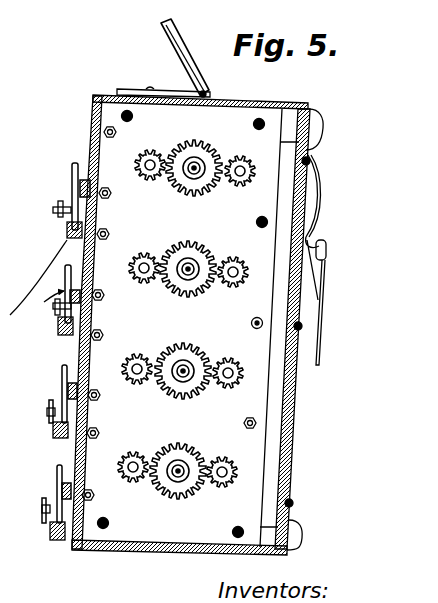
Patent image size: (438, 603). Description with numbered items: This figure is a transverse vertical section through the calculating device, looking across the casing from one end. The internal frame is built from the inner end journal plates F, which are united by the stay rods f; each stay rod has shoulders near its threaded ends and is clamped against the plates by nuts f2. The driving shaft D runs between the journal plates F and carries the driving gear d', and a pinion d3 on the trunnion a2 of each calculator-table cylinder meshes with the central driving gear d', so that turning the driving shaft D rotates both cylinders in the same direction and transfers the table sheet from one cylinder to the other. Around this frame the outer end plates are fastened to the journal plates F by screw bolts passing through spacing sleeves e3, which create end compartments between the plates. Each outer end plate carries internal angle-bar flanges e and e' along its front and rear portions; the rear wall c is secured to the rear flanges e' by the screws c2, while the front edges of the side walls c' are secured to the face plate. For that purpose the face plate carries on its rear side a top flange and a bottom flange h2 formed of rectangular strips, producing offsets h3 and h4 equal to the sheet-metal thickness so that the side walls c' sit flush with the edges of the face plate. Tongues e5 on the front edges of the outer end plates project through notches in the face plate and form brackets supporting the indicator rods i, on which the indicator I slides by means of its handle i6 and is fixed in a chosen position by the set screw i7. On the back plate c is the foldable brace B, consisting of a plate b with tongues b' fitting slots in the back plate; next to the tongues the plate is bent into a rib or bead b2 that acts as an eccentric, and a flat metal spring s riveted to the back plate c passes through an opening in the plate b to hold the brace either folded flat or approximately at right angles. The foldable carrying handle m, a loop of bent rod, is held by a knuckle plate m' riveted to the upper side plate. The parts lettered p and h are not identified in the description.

The rear wall c is at (204, 325).
The lug p is at (326, 115).
The side walls c' is at (253, 337).
The rear flange e' is at (273, 386).
The screws c2 is at (311, 162).
The foldable handle m is at (185, 58).
The knuckle plate m' is at (180, 88).
The driving gear d' is at (186, 319).
The pinion d3 is at (137, 452).
The driving shaft D is at (193, 174).
The trunnion a2 is at (240, 176).
The nuts f2 is at (112, 193).
The stay rods f is at (110, 234).
The spacing sleeves e3 is at (134, 116).
The rod h is at (70, 192).
The indicator rods i is at (66, 232).
The handle i6 is at (53, 210).
The set screw i7 is at (35, 277).
The tongues or extensions e5 is at (46, 300).
The indicator I is at (70, 176).
The front flange e is at (108, 298).
The flat metal spring s is at (319, 196).
The tongues b' is at (338, 244).
The rib or bead b2 is at (327, 252).
The foldable brace B is at (328, 312).
The plate b is at (329, 353).
The inner end journal plates F is at (176, 525).
The offset h3 is at (100, 94).
The offset h4 is at (74, 552).
The bottom flange h2 is at (96, 553).